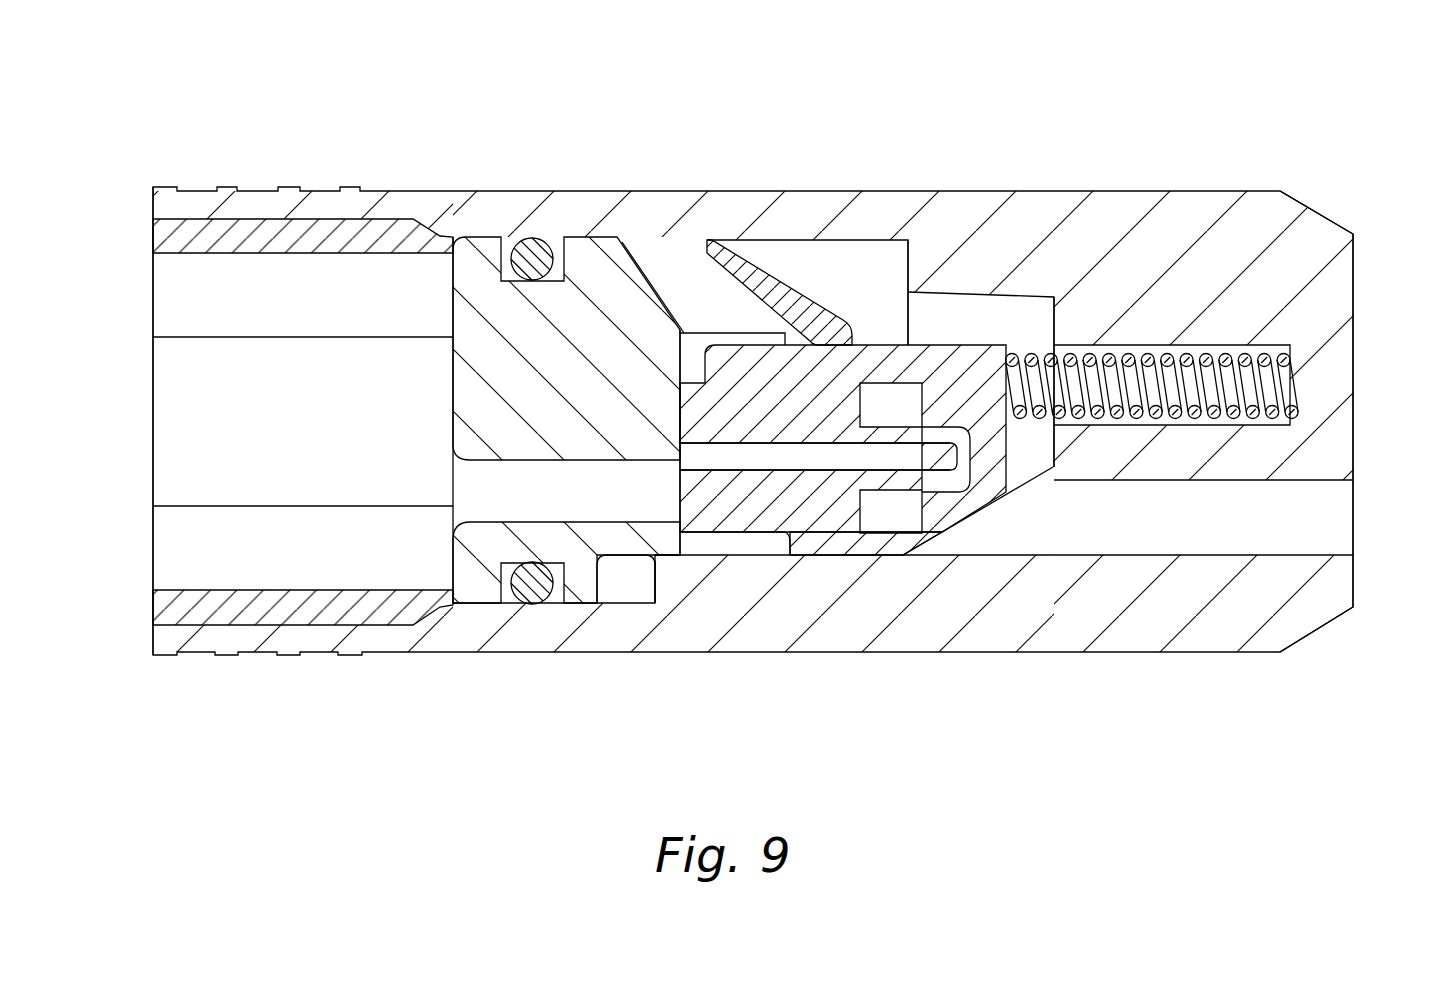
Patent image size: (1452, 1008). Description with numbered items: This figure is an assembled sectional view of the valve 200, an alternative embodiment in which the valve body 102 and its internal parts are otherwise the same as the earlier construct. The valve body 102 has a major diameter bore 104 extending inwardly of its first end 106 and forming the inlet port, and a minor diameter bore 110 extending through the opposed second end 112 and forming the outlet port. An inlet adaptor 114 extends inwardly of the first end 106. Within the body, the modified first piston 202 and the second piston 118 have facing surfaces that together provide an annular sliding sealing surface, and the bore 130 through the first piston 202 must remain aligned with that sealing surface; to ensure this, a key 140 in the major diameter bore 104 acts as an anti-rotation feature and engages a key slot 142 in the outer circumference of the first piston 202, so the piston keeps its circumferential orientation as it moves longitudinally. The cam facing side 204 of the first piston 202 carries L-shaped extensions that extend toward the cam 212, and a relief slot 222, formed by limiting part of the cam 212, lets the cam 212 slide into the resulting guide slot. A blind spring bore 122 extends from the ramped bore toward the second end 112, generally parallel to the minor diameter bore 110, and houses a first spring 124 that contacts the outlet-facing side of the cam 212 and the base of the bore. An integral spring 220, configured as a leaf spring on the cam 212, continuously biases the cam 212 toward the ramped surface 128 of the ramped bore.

The valve 200 is at (168, 60).
The valve body 102 is at (1128, 188).
The major diameter bore 104 is at (789, 240).
The first end 106 is at (152, 204).
The minor diameter bore 110 is at (1203, 533).
The second end 112 is at (1356, 412).
The inlet adaptor 114 is at (259, 222).
The second piston 118 is at (768, 532).
The blind spring bore 122 is at (1152, 359).
The first spring 124 is at (1141, 362).
The ramped surface 128 is at (990, 498).
The bore 130 is at (565, 506).
The key 140 is at (672, 573).
The key slot 142 is at (617, 573).
The first piston 202 is at (605, 243).
The cam facing side 204 is at (684, 347).
The cam 212 is at (835, 558).
The integral spring 220 is at (785, 284).
The relief slot 222 is at (717, 545).